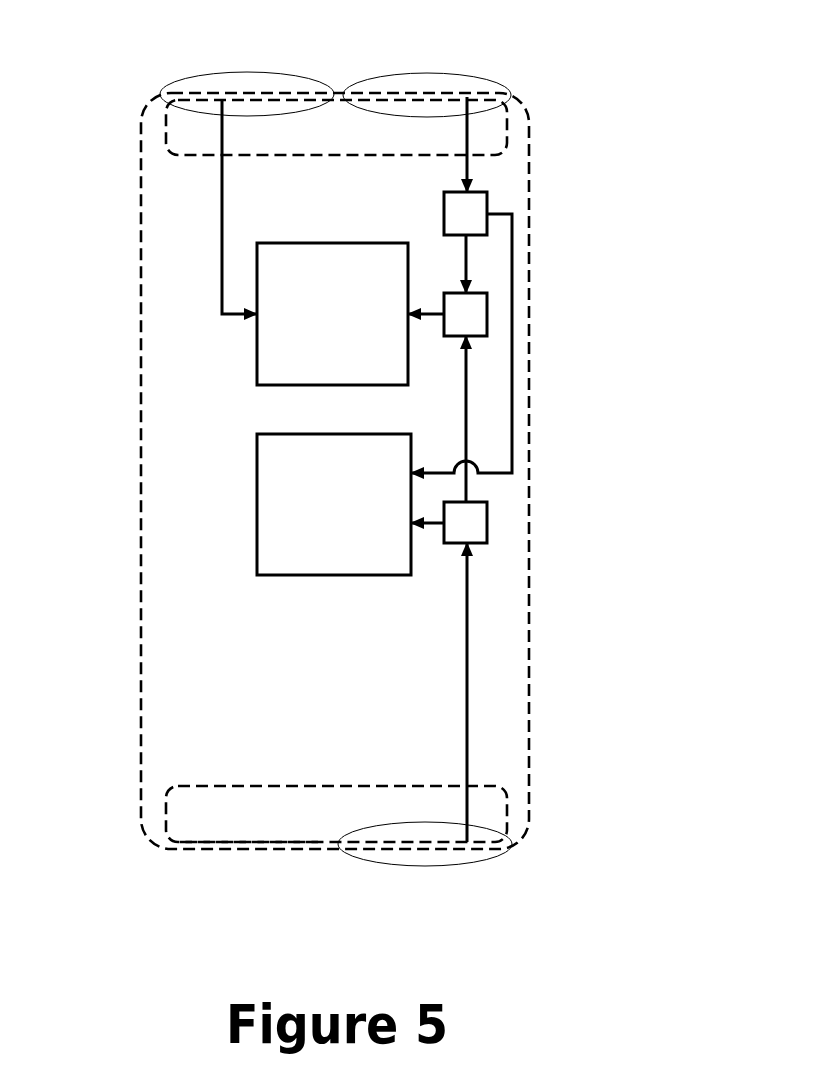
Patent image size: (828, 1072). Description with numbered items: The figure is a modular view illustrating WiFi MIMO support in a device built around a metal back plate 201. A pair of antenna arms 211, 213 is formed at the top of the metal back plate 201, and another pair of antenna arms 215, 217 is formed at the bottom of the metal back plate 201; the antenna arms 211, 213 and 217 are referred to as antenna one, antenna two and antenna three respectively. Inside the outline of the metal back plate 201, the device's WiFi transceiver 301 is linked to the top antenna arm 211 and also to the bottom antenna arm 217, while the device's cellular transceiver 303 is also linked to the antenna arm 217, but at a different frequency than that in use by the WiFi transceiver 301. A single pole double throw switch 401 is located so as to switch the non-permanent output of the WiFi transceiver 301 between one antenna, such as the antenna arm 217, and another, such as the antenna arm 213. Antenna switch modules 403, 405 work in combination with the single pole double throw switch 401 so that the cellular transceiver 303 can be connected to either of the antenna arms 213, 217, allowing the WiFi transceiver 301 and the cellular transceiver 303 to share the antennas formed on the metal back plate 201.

The metal back plate 201 is at (108, 194).
The antenna arm (ant-1) 211 is at (198, 93).
The antenna arm (ant-2) 213 is at (440, 93).
The antenna arm 215 is at (222, 846).
The antenna arm (ant-3) 217 is at (442, 846).
The WiFi transceiver 301 is at (332, 314).
The cellular transceiver 303 is at (334, 504).
The single pole double throw switch 401 is at (477, 312).
The antenna switch module 403 is at (477, 518).
The antenna switch module 405 is at (477, 208).